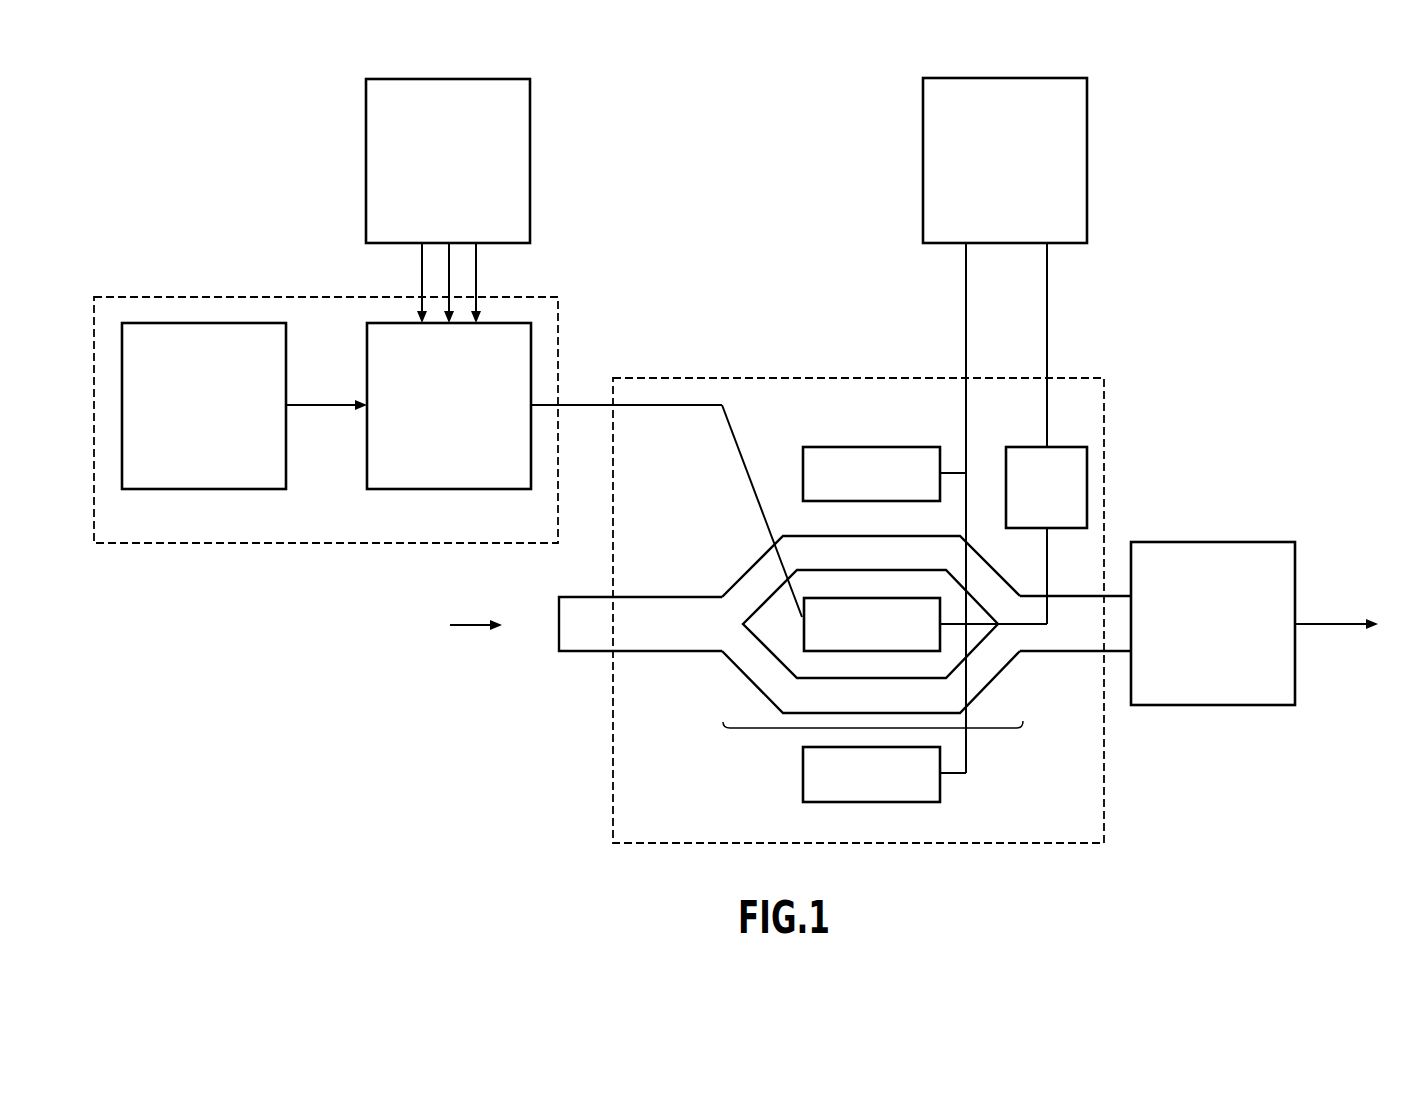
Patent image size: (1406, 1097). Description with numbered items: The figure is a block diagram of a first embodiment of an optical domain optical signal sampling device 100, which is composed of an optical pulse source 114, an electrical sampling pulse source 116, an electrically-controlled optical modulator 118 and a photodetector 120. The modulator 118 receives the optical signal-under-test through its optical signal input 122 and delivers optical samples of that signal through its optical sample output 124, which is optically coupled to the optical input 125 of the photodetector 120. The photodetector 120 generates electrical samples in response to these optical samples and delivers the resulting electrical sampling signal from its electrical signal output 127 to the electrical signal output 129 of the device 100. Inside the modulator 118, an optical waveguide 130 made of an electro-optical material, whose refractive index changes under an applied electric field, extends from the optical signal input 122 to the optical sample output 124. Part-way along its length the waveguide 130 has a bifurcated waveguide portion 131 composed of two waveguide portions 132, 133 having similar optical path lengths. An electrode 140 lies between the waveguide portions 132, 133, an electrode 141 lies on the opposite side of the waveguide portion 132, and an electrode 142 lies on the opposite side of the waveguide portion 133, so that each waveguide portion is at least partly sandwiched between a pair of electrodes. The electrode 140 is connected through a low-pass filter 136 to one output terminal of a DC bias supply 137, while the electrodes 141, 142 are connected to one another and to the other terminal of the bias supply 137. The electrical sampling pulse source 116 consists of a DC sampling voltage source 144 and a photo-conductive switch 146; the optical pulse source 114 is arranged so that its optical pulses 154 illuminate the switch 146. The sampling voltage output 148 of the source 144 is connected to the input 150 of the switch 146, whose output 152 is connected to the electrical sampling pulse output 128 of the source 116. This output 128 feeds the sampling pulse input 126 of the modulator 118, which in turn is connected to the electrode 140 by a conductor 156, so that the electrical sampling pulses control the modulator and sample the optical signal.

The optical domain optical signal sampling device 100 is at (767, 257).
The optical pulse source 114 is at (531, 163).
The electrical sampling pulse source 116 is at (325, 545).
The electrically-controlled optical modulator 118 is at (833, 377).
The photodetector 120 is at (1220, 707).
The optical signal input 122 is at (559, 625).
The optical sample output 124 is at (1102, 622).
The optical input 125 is at (1125, 622).
The sampling pulse input 126 is at (613, 407).
The electrical signal output 127 is at (1296, 620).
The sampling pulse output 128 is at (558, 407).
The electrical signal output 129 is at (1372, 630).
The optical waveguide 130 is at (658, 620).
The bifurcated waveguide portion 131 is at (875, 729).
The waveguide portion 132 is at (748, 557).
The waveguide portion 133 is at (741, 681).
The low-pass filter 136 is at (1087, 475).
The DC bias supply 137 is at (1087, 163).
The electrode 140 is at (878, 622).
The electrode 141 is at (880, 475).
The electrode 142 is at (928, 792).
The DC sampling voltage source 144 is at (287, 341).
The photoconductive switch 146 is at (532, 340).
The sampling voltage output 148 is at (287, 405).
The input 150 is at (367, 407).
The output 152 is at (532, 405).
The optical pulses 154 is at (492, 257).
The conductor 156 is at (738, 443).